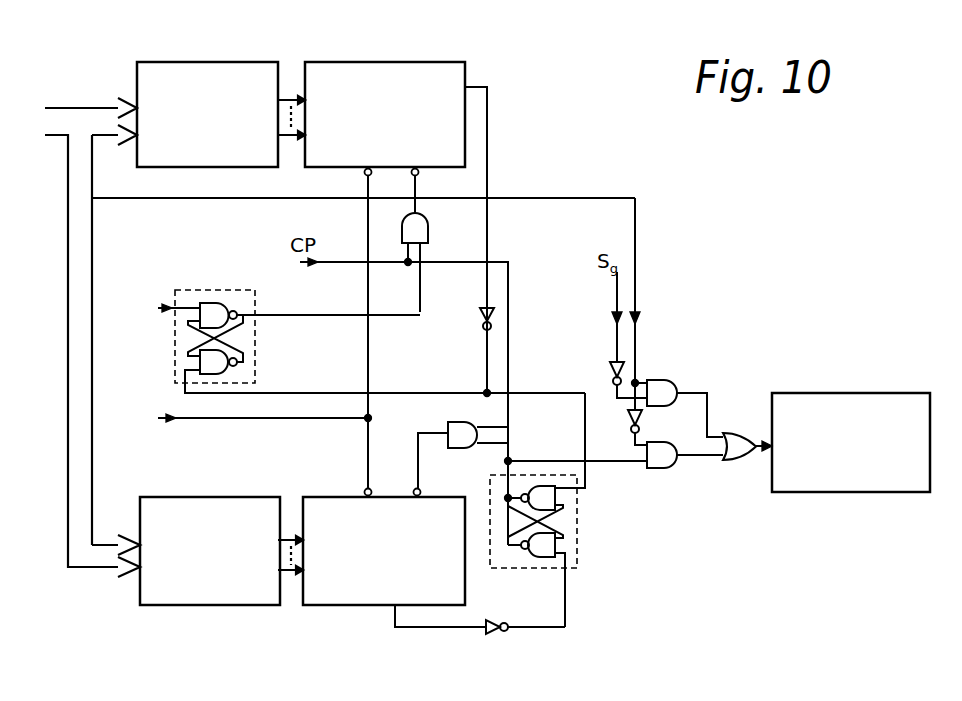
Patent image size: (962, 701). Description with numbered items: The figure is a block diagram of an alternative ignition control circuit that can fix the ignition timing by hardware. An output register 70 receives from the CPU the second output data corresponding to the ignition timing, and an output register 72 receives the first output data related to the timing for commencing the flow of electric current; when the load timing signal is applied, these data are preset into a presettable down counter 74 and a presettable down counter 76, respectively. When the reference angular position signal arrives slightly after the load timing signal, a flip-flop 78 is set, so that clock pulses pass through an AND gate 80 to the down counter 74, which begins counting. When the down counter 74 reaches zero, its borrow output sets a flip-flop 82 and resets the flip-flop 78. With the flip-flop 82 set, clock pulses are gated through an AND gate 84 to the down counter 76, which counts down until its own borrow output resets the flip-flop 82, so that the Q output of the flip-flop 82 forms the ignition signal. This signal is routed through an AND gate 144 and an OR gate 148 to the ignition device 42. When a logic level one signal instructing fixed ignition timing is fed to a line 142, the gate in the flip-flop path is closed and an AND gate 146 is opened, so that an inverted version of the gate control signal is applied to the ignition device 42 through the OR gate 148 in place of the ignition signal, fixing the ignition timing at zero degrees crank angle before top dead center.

The output register 70 is at (266, 62).
The presettable down counter 74 is at (440, 62).
The output register 72 is at (240, 497).
The presettable down counter 76 is at (455, 497).
The flip-flop 78 is at (217, 290).
The AND gate 80 is at (428, 228).
The flip-flop 82 is at (512, 568).
The AND gate 84 is at (450, 422).
The line 142 is at (574, 198).
The AND gate 144 is at (662, 468).
The AND gate 146 is at (674, 381).
The OR gate 148 is at (740, 461).
The ignition device 42 is at (873, 393).